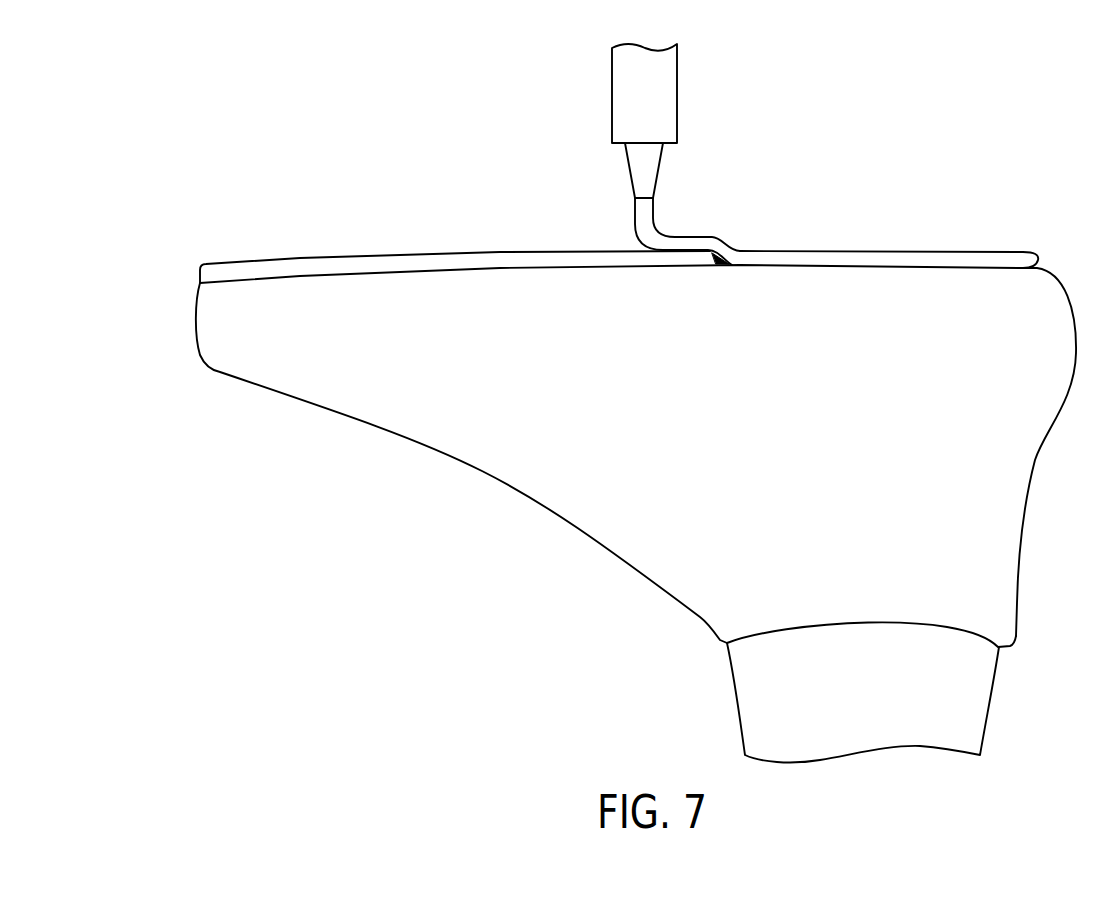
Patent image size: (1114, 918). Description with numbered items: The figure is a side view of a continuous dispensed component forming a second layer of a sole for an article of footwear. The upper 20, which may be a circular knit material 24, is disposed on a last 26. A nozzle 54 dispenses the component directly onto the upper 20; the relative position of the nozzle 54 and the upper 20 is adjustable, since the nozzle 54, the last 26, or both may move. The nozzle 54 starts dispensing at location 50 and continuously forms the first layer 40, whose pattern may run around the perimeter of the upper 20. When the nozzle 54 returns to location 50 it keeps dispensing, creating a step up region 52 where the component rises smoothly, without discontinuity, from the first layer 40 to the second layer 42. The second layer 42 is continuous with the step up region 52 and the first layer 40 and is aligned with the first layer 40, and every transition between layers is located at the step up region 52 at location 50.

The upper 20 is at (636, 513).
The circular knit material 24 is at (1010, 502).
The last 26 is at (973, 707).
The first layer 40 is at (422, 262).
The second layer 42 is at (679, 242).
The location 50 is at (715, 260).
The step up region 52 is at (729, 230).
The nozzle 54 is at (647, 173).